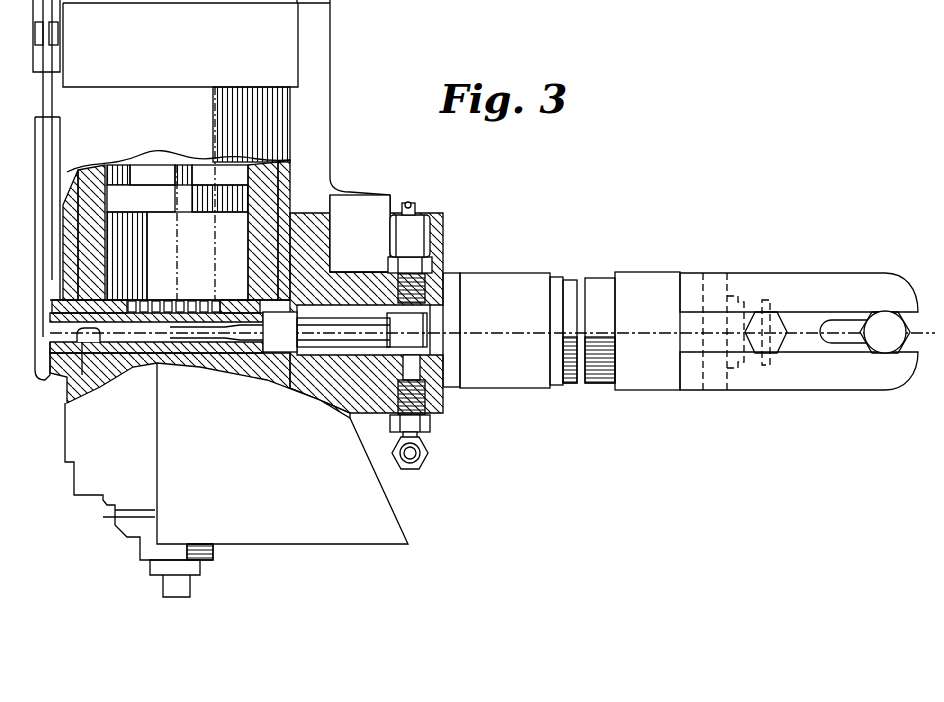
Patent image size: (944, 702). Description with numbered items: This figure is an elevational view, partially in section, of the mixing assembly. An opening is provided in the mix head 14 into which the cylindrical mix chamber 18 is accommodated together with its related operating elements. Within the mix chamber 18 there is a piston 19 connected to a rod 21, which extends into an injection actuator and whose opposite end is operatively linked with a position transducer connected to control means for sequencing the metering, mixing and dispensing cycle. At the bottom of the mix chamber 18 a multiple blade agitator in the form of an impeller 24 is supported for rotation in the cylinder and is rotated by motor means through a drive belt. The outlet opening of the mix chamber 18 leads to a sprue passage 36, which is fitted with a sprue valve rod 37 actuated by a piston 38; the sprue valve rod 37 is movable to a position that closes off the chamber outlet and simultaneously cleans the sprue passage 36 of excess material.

The mix head 14 is at (330, 235).
The mix chamber 18 is at (287, 175).
The piston 19 is at (128, 197).
The rod 21 is at (157, 163).
The impeller 24 is at (182, 300).
The sprue passage 36 is at (87, 340).
The sprue valve rod 37 is at (230, 333).
The piston 38 is at (602, 383).